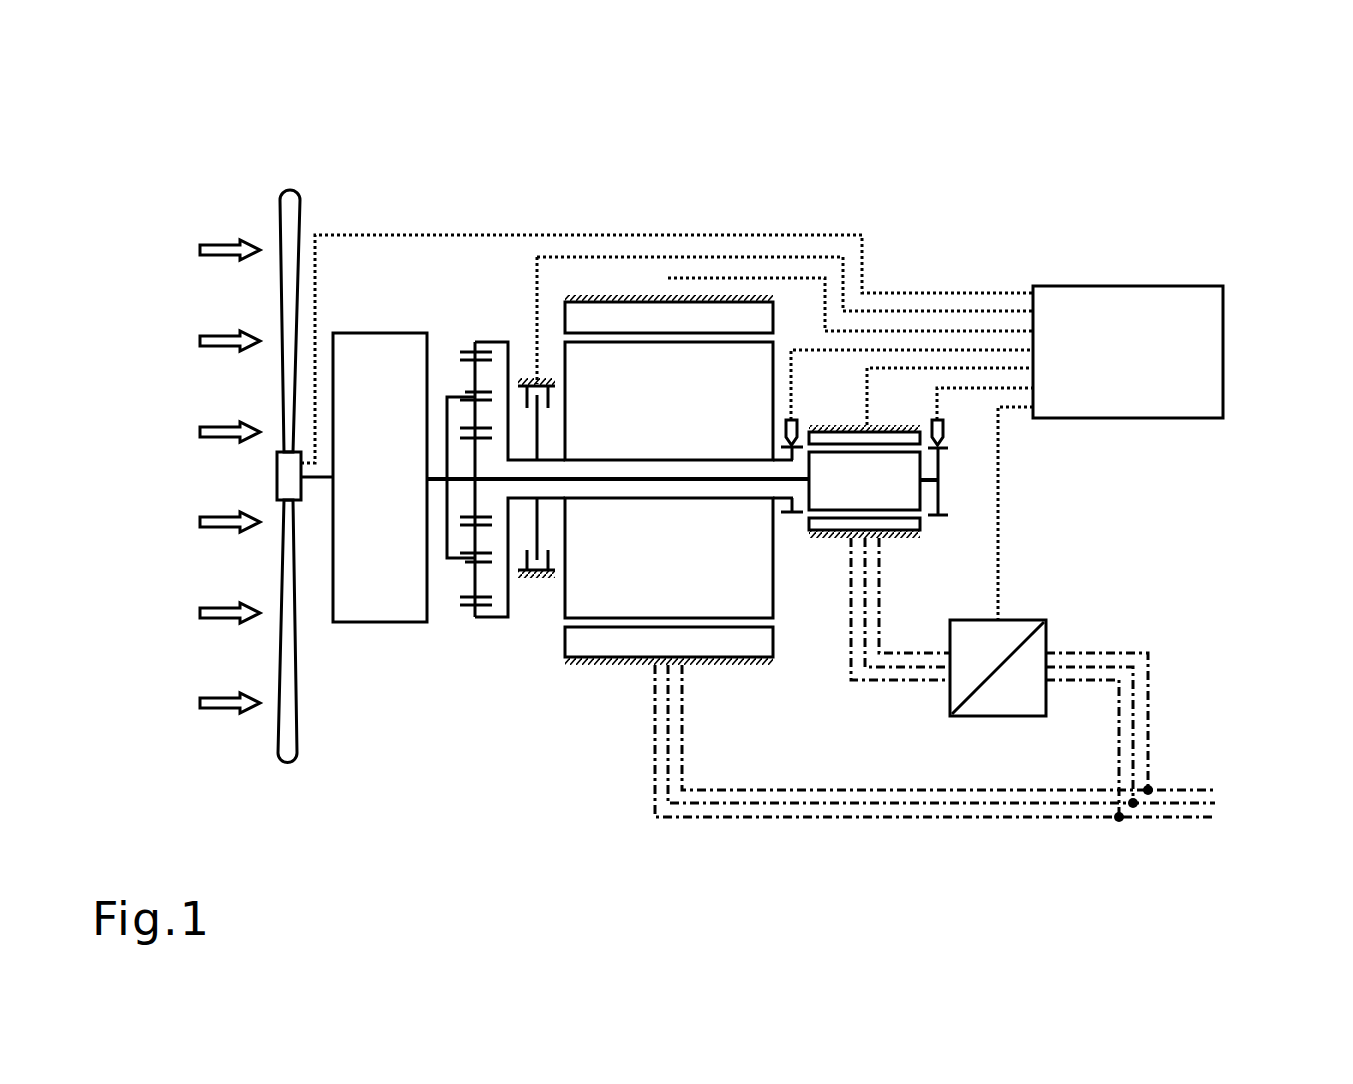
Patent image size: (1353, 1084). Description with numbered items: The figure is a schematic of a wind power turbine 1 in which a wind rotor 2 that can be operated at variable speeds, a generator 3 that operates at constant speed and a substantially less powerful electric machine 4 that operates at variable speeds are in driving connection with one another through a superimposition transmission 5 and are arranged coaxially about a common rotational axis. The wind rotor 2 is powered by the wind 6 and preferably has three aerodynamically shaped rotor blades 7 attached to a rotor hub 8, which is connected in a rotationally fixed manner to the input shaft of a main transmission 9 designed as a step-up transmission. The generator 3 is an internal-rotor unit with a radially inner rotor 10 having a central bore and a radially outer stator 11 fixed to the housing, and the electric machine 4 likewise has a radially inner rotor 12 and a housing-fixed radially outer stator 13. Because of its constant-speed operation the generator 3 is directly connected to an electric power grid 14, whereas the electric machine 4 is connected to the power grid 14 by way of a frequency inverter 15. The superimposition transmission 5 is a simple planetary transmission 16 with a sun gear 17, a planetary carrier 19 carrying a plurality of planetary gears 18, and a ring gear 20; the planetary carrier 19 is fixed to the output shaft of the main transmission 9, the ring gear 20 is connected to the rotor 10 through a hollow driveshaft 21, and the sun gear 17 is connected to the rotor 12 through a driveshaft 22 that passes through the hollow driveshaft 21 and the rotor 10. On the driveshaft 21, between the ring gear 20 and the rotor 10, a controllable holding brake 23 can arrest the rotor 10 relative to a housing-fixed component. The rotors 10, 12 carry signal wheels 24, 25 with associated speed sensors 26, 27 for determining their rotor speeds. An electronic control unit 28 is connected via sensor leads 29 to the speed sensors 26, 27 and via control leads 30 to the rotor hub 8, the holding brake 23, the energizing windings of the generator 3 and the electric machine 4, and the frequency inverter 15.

The wind power turbine 1 is at (398, 762).
The wind rotor 2 is at (197, 413).
The generator 3 is at (665, 364).
The electric machine 4 is at (873, 300).
The superimposition transmission 5 is at (318, 364).
The wind 6 is at (211, 407).
The rotor blades 7 is at (287, 298).
The rotor hub 8 is at (293, 477).
The main transmission 9 is at (368, 497).
The rotor 10 is at (679, 480).
The stator 11 is at (608, 320).
The rotor 12 is at (873, 481).
The stator 13 is at (848, 437).
The electric power grid 14 is at (1208, 777).
The frequency inverter 15 is at (1030, 650).
The planetary transmission 16 is at (499, 340).
The sun gear 17 is at (475, 487).
The planetary gears 18 is at (281, 621).
The planetary carrier 19 is at (447, 545).
The ring gear 20 is at (463, 345).
The driveshaft 21 is at (520, 500).
The driveshaft 22 is at (592, 482).
The holding brake 23 is at (537, 595).
The signal wheel 24 is at (792, 513).
The signal wheel 25 is at (940, 500).
The speed sensor 26 is at (791, 418).
The speed sensor 27 is at (943, 432).
The electronic control unit 28 is at (1101, 371).
The sensor leads 29 is at (950, 387).
The control leads 30 is at (733, 278).